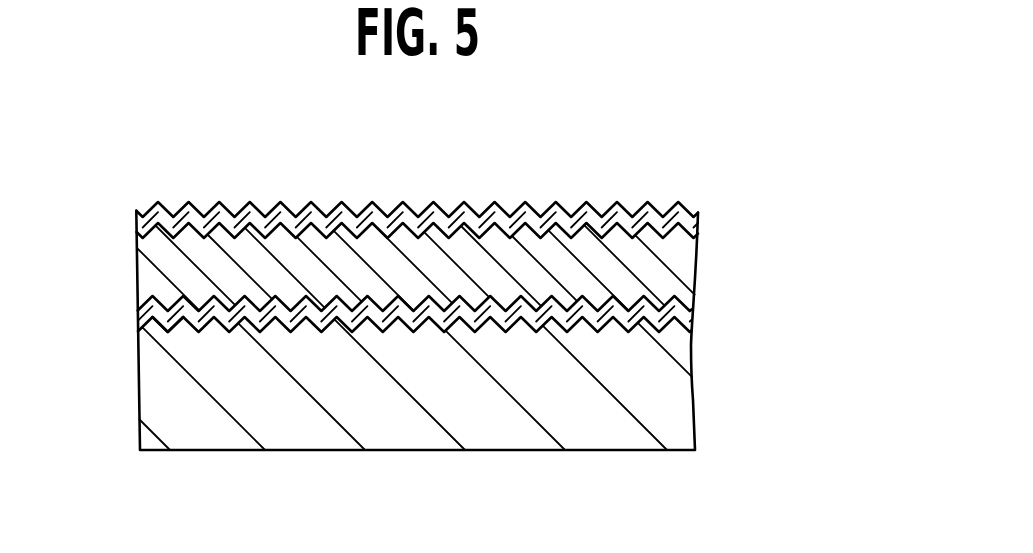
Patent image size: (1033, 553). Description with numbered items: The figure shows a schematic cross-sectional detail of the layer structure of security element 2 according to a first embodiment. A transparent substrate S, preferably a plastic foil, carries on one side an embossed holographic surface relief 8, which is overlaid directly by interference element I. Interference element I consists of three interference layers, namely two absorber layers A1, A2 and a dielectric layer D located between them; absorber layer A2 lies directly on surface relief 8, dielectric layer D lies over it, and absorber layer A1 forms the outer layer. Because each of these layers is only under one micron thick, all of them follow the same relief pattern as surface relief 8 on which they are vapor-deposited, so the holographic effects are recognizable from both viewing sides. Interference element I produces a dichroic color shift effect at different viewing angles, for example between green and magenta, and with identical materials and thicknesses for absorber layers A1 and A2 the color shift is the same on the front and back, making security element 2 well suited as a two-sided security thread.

The security element 2 is at (118, 185).
The holographic surface relief 8 is at (174, 329).
The absorber layer A1 is at (698, 227).
The dielectric layer D is at (677, 272).
The absorber layer A2 is at (688, 318).
The transparent substrate S is at (673, 397).
The interference element I is at (857, 198).